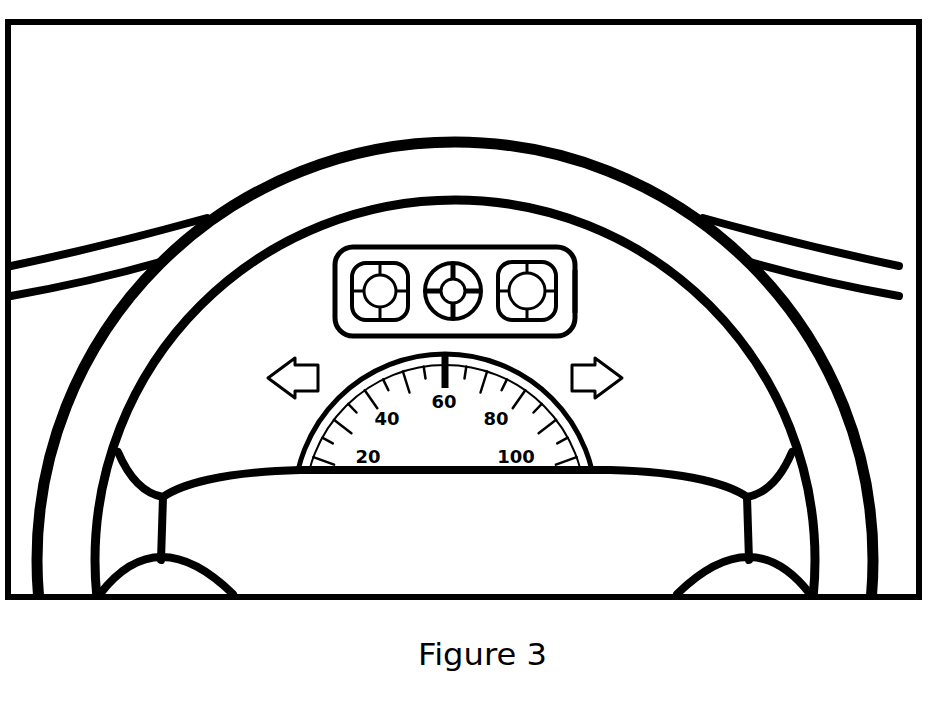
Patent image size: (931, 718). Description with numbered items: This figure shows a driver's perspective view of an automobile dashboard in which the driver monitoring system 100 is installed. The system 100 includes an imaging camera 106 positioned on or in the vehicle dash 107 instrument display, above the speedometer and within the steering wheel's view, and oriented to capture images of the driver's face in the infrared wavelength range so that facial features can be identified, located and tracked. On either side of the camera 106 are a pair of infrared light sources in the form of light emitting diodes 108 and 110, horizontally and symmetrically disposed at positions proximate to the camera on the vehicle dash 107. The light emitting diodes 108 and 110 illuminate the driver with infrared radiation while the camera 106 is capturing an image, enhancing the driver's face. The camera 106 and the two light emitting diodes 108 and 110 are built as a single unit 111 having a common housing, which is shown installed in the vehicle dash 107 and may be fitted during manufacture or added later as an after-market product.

The driver monitoring system 100 is at (458, 191).
The imaging camera 106 is at (455, 257).
The vehicle dash 107 is at (287, 302).
The light emitting diode 108 is at (382, 248).
The light emitting diode 110 is at (528, 248).
The single unit 111 is at (580, 292).